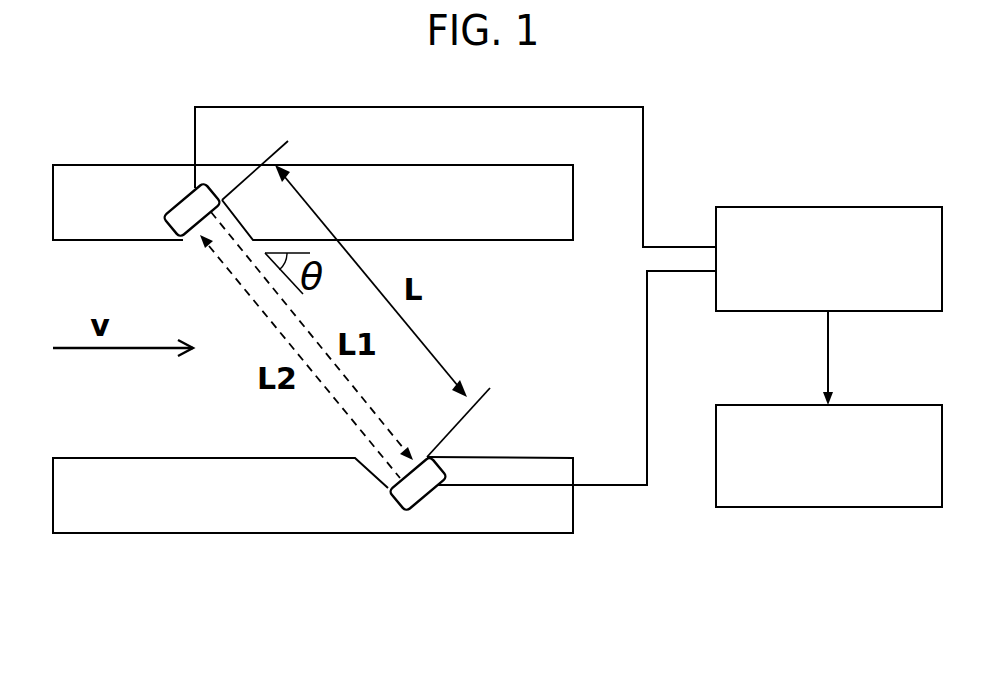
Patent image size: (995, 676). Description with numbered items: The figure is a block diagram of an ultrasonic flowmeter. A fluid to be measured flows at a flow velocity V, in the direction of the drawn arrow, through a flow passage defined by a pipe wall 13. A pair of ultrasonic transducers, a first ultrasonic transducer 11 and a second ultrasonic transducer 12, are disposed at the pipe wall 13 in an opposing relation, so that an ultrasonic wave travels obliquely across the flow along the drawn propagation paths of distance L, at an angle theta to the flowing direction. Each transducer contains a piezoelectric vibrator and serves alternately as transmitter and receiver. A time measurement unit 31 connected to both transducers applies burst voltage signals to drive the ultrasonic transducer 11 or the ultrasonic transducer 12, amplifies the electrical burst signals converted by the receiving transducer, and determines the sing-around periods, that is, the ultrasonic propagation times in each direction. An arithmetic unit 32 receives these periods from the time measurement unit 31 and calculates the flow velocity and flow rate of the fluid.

The first ultrasonic transducer 11 is at (188, 210).
The second ultrasonic transducer 12 is at (425, 483).
The pipe wall 13 is at (532, 220).
The time measurement unit 31 is at (828, 207).
The arithmetic unit 32 is at (827, 508).